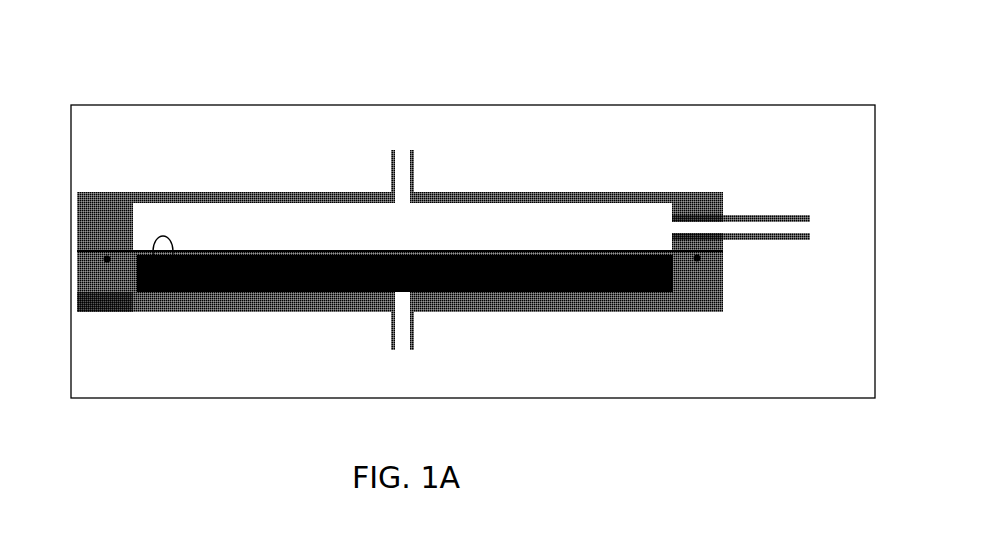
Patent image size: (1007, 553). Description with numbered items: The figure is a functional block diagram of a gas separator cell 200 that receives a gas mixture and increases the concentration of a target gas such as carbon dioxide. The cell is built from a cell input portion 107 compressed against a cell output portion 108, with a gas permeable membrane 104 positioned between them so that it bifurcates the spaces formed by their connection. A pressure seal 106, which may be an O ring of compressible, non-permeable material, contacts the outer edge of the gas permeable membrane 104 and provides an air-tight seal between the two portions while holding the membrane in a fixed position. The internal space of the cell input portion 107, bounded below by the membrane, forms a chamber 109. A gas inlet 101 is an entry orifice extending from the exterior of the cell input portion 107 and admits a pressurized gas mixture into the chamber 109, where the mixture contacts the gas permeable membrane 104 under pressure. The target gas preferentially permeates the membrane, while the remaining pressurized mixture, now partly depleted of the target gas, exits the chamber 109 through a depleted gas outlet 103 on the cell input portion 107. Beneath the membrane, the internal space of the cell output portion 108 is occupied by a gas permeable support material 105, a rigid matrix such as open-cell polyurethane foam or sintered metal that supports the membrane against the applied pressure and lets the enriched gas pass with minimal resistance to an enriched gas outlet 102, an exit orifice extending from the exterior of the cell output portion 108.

The gas inlet 101 is at (419, 168).
The enriched gas outlet 102 is at (457, 352).
The depleted gas outlet 103 is at (815, 212).
The gas permeable membrane 104 is at (163, 236).
The gas permeable support material 105 is at (208, 279).
The pressure seal 106 is at (697, 270).
The cell input portion 107 is at (112, 205).
The cell output portion 108 is at (106, 292).
The chamber 109 is at (568, 210).
The gas separator cell 200 is at (591, 83).